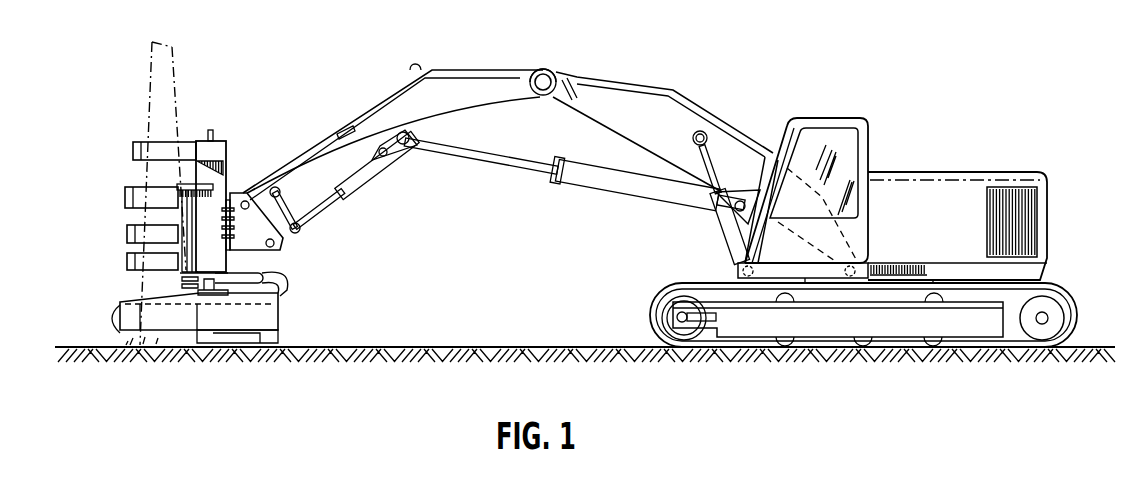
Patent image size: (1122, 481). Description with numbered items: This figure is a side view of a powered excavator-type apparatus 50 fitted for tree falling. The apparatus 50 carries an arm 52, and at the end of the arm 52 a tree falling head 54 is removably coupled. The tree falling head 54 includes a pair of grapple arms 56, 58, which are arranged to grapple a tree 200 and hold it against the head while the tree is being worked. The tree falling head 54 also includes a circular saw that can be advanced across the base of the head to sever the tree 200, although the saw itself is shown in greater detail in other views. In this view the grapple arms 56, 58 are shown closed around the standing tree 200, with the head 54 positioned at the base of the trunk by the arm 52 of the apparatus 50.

The powered excavator-type apparatus 50 is at (906, 168).
The arm 52 is at (474, 84).
The tree falling head 54 is at (225, 168).
The grapple arm 56 is at (125, 193).
The grapple arm 58 is at (127, 262).
The tree 200 is at (176, 90).